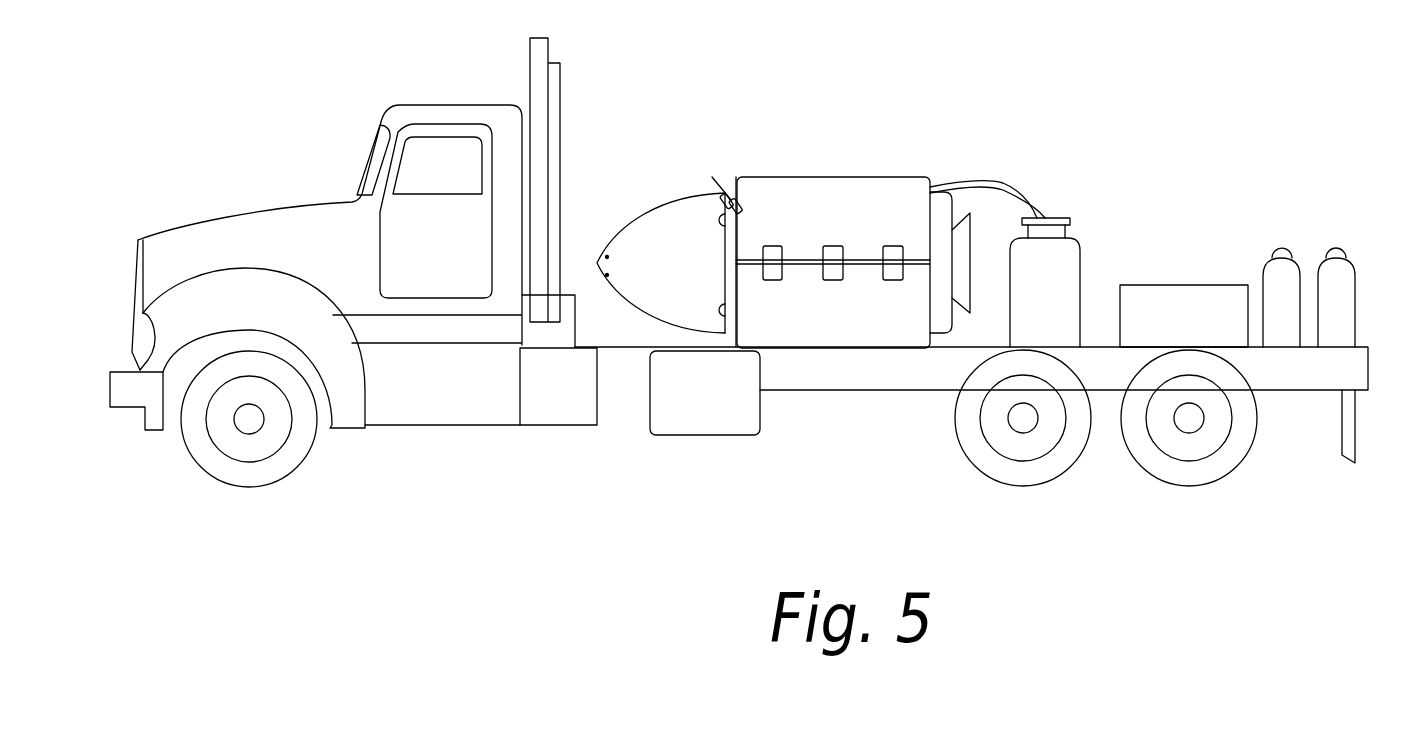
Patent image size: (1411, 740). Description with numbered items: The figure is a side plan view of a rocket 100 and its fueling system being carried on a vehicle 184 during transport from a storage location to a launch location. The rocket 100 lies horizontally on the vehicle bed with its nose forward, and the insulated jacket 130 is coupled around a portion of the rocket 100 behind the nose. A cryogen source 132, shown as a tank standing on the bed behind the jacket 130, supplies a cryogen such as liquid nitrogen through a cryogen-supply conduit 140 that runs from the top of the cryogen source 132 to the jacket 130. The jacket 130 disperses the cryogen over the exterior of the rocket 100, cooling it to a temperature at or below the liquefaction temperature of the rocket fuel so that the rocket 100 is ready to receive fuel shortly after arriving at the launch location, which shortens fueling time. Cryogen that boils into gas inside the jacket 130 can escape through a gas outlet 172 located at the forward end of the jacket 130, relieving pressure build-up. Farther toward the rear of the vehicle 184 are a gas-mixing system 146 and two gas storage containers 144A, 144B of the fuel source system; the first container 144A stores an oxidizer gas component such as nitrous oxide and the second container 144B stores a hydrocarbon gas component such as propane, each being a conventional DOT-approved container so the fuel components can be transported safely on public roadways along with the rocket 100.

The rocket 100 is at (938, 198).
The insulated jacket 130 is at (827, 188).
The cryogen source 132 is at (1068, 253).
The cryogen-supply conduit 140 is at (1004, 182).
The first gas storage container 144A is at (1348, 258).
The second gas storage container 144B is at (1295, 258).
The gas-mixing system 146 is at (1197, 293).
The gas outlet 172 is at (741, 177).
The vehicle 184 is at (838, 383).